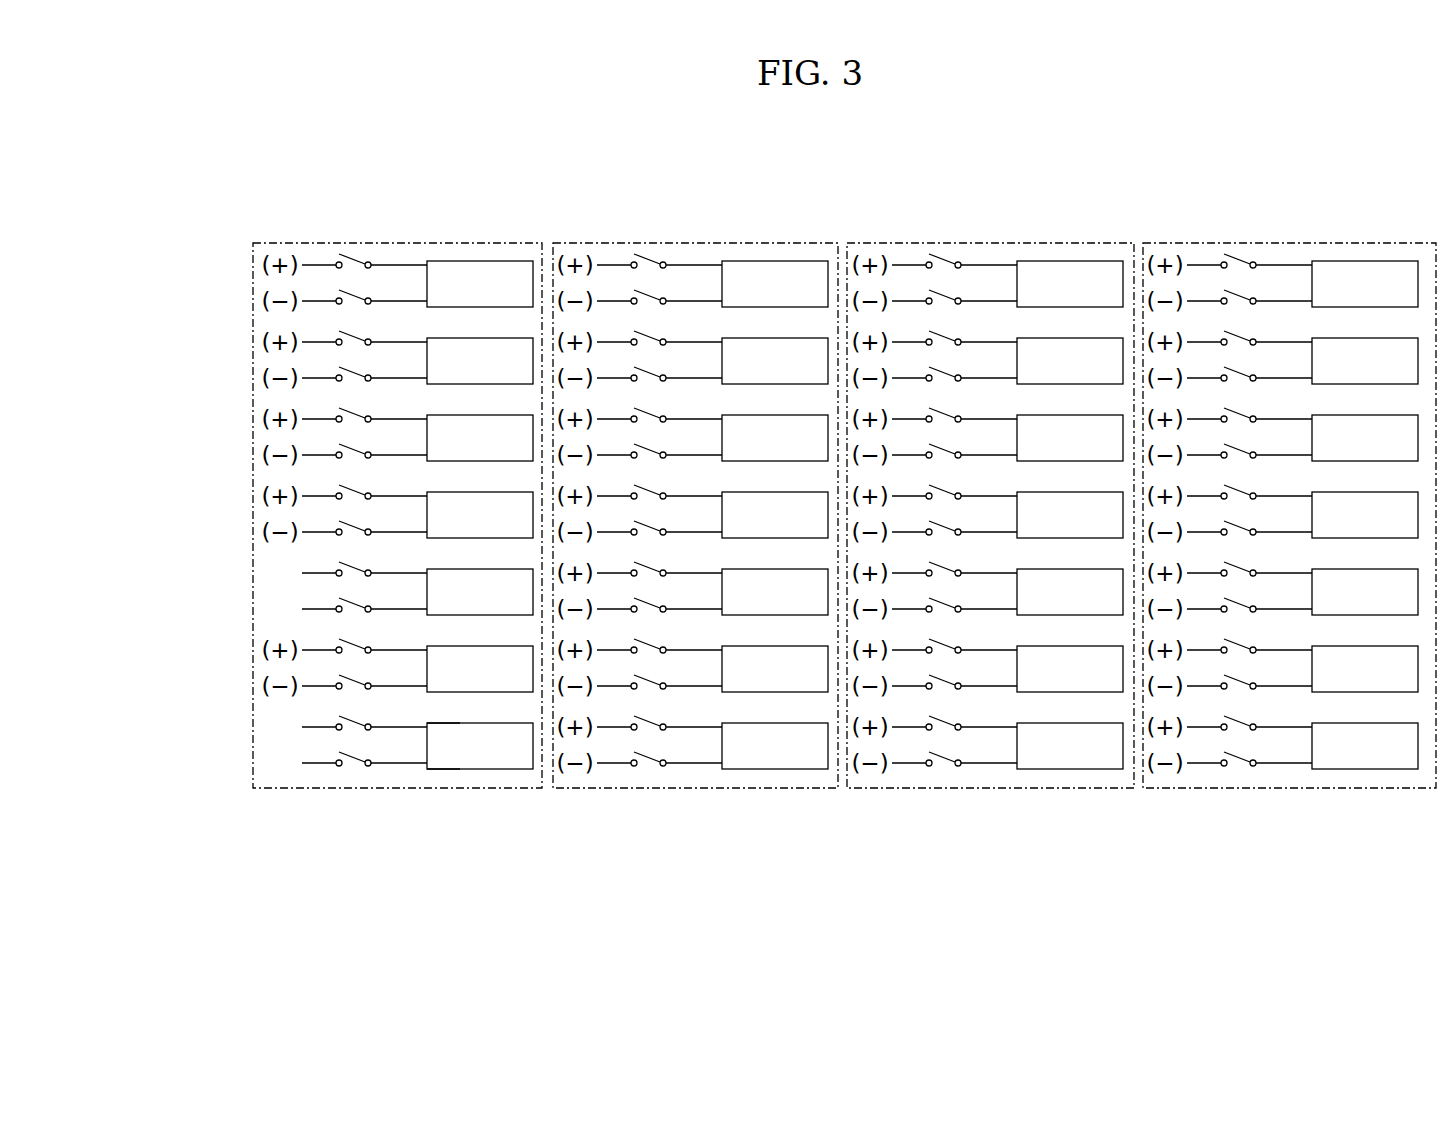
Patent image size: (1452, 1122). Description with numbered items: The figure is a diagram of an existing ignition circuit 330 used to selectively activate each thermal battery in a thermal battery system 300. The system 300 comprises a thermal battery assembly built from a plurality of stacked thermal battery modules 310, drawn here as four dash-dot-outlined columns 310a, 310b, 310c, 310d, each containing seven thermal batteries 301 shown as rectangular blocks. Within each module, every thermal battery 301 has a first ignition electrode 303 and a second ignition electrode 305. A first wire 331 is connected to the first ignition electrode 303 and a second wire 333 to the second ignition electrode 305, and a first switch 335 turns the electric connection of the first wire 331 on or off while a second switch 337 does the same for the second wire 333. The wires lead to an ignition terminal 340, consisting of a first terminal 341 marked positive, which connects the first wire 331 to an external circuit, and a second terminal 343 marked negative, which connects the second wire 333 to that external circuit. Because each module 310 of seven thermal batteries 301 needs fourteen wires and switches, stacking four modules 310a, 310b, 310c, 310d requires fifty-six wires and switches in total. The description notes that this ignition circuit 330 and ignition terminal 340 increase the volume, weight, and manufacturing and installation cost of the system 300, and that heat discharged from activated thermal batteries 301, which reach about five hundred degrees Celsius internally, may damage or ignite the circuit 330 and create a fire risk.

The thermal battery system 300 is at (1446, 176).
The thermal battery module 310 is at (1300, 167).
The thermal battery module 310a is at (525, 243).
The thermal battery module 310b is at (699, 243).
The thermal battery module 310c is at (993, 243).
The thermal battery module 310d is at (1290, 243).
The thermal battery 301 is at (520, 762).
The first ignition electrode 303 is at (430, 723).
The second ignition electrode 305 is at (430, 770).
The ignition circuit 330 is at (390, 852).
The first wire 331 is at (397, 727).
The second wire 333 is at (385, 764).
The first switch 335 is at (350, 720).
The second switch 337 is at (354, 757).
The ignition terminal 340 is at (182, 562).
The first terminal 341 is at (262, 573).
The second terminal 343 is at (262, 609).